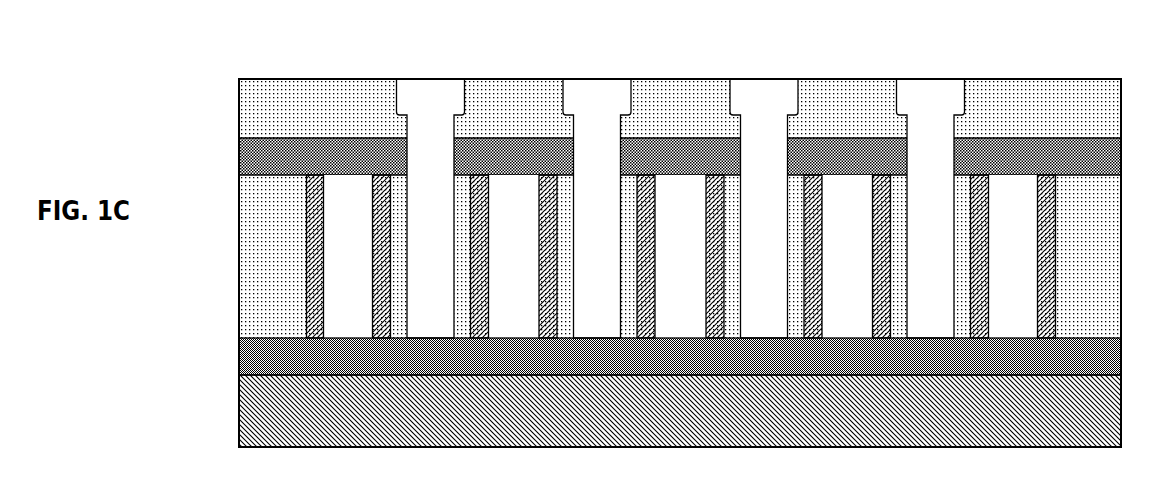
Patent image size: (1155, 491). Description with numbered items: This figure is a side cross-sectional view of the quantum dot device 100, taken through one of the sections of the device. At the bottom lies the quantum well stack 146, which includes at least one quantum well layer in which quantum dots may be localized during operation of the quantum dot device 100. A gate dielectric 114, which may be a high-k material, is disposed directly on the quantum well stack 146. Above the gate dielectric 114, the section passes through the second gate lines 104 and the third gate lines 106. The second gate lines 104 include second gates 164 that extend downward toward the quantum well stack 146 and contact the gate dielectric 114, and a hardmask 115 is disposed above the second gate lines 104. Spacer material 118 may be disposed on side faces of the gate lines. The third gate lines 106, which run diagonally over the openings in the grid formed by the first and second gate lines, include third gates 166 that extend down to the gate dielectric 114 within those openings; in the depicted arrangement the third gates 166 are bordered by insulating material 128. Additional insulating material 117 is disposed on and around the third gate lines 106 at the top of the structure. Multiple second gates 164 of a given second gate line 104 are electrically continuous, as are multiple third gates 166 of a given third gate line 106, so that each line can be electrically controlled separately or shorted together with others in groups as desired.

The quantum dot device 100 is at (210, 78).
The second gate lines 104 is at (362, 268).
The third gate lines 106 is at (416, 220).
The gate dielectric 114 is at (666, 367).
The hardmask 115 is at (666, 169).
The insulating material 117 is at (666, 120).
The spacer material 118 is at (470, 79).
The insulating material 128 is at (258, 268).
The quantum well stack 146 is at (666, 421).
The second gates 164 is at (338, 158).
The third gates 166 is at (377, 320).